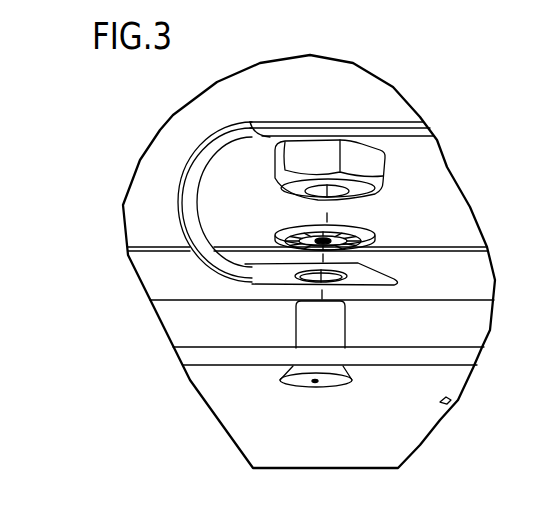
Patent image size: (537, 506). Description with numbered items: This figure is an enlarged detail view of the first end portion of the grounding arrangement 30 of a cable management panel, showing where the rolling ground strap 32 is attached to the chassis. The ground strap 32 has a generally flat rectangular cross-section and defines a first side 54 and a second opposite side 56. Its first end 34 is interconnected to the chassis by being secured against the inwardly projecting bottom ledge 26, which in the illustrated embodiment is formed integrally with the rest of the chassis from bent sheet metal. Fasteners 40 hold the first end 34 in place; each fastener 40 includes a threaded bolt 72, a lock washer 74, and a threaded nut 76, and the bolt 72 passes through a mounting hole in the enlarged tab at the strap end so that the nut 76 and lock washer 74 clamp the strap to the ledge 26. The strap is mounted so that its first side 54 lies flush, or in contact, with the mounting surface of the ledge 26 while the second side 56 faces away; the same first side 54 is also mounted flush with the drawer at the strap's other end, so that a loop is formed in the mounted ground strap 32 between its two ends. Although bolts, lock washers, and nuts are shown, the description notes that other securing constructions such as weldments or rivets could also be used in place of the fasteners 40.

The bottom ledge 26 is at (430, 347).
The grounding arrangement 30 is at (242, 195).
The ground strap 32 is at (370, 122).
The first end 34 is at (365, 278).
The fasteners 40 is at (248, 393).
The first side 54 is at (287, 122).
The second opposite side 56 is at (407, 130).
The threaded bolt 72 is at (345, 387).
The lock washer 74 is at (275, 228).
The threaded nut 76 is at (278, 162).